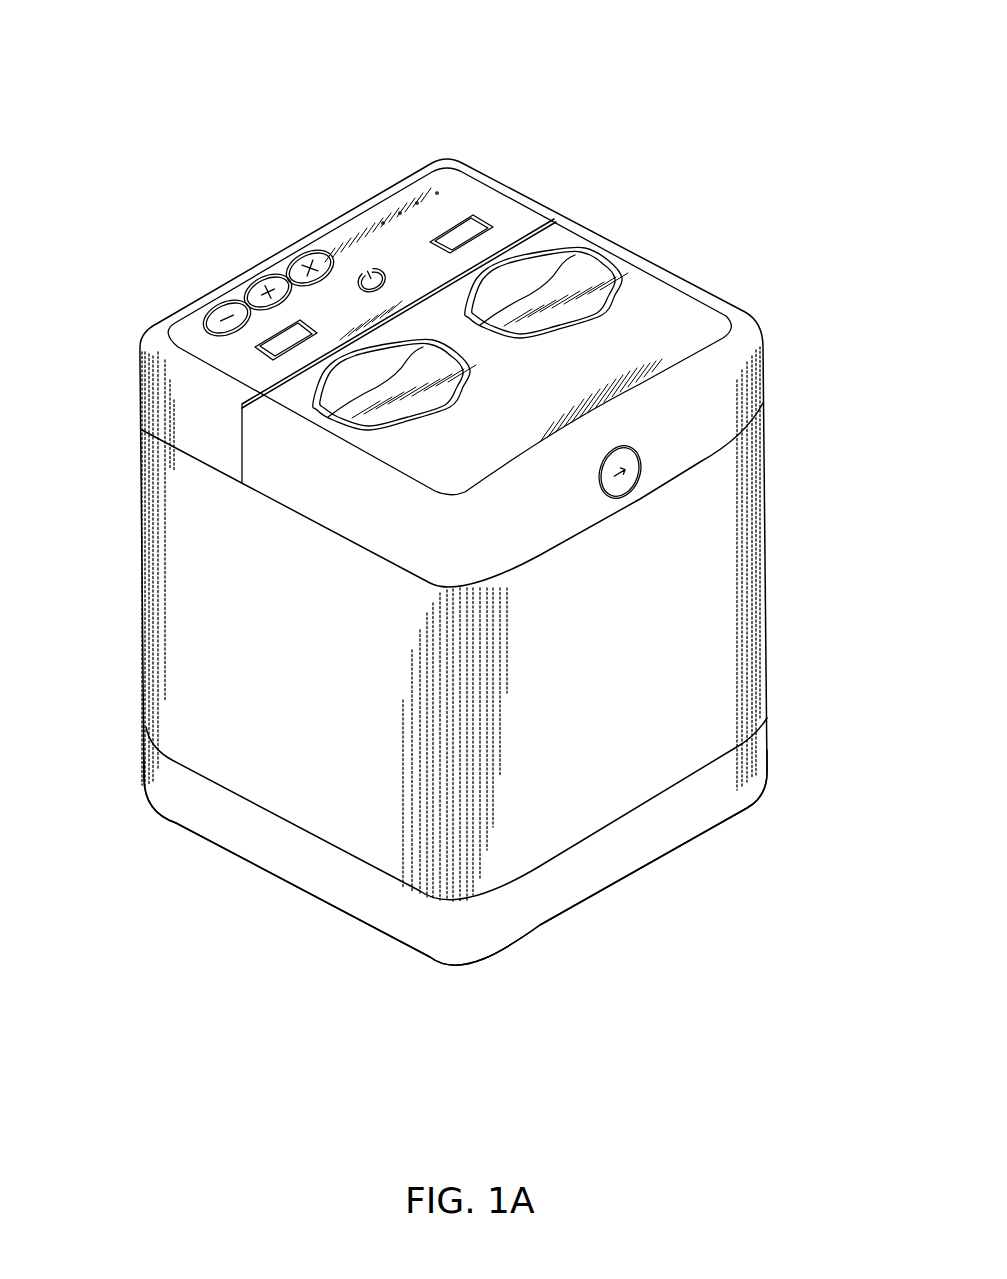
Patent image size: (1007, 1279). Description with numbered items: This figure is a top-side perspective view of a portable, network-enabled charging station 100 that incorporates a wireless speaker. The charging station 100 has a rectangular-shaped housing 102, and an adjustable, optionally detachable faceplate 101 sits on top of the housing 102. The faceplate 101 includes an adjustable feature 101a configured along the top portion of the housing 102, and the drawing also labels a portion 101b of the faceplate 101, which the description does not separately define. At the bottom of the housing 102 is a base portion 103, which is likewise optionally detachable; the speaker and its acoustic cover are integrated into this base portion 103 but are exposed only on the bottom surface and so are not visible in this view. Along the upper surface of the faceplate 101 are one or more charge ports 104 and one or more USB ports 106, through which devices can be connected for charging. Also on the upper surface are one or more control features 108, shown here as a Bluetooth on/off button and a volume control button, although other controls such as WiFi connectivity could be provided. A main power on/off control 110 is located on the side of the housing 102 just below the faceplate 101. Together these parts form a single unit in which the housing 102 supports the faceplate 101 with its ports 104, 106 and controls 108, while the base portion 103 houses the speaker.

The charging station 100 is at (492, 64).
The adjustable faceplate 101 is at (764, 349).
The adjustable feature 101a is at (327, 500).
The raised control panel of lid 101b is at (198, 434).
The housing 102 is at (767, 557).
The base portion 103 is at (768, 779).
The charge ports 104 is at (602, 258).
The USB ports 106 is at (482, 213).
The control features 108 is at (290, 262).
The main power on/off control 110 is at (642, 460).